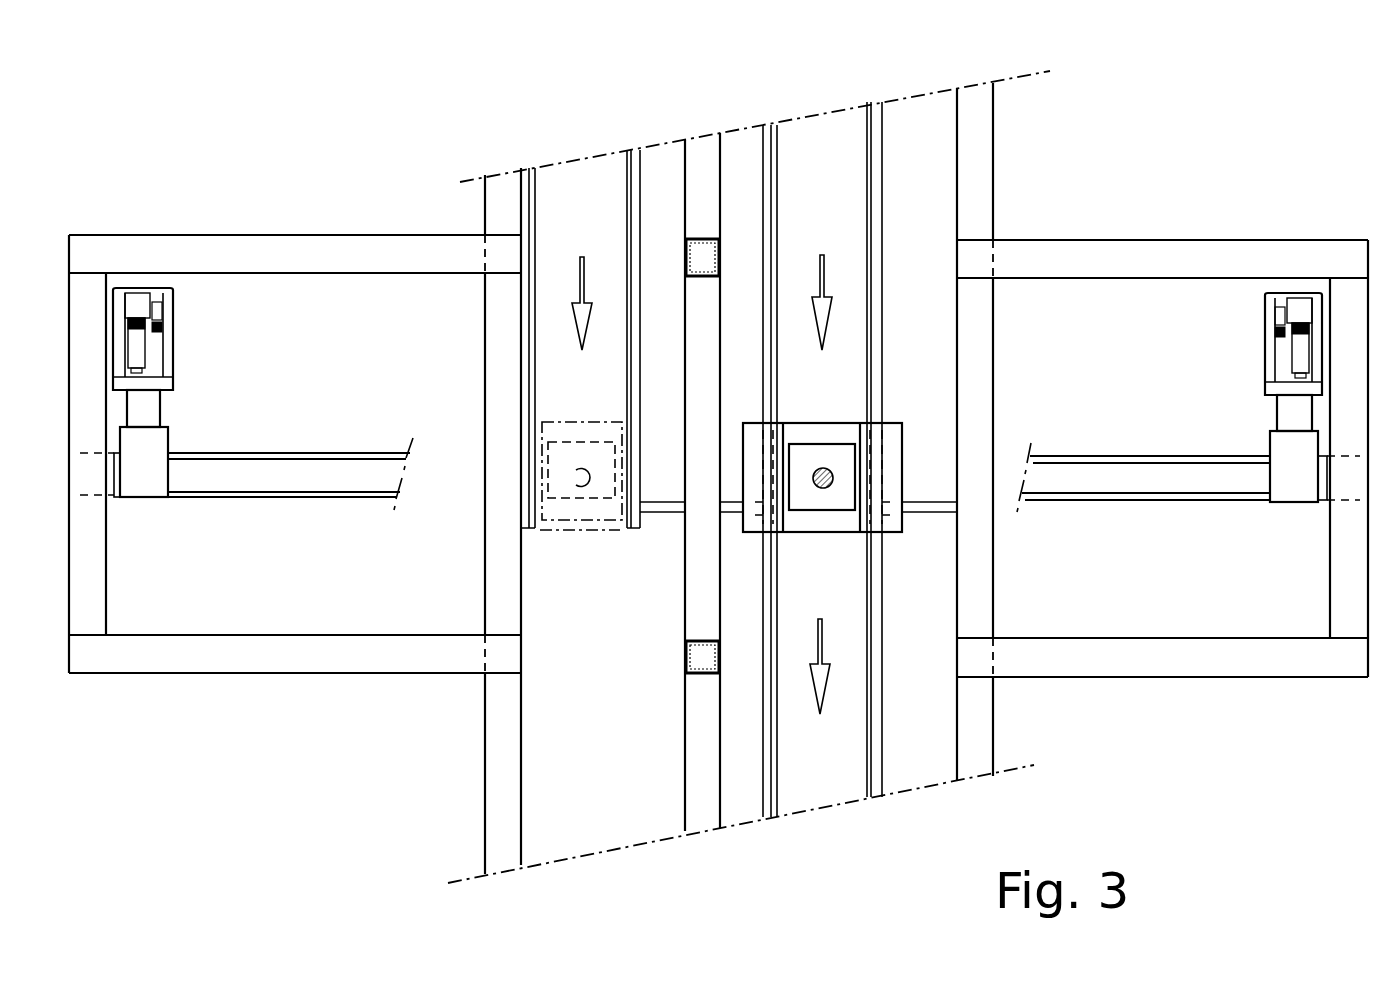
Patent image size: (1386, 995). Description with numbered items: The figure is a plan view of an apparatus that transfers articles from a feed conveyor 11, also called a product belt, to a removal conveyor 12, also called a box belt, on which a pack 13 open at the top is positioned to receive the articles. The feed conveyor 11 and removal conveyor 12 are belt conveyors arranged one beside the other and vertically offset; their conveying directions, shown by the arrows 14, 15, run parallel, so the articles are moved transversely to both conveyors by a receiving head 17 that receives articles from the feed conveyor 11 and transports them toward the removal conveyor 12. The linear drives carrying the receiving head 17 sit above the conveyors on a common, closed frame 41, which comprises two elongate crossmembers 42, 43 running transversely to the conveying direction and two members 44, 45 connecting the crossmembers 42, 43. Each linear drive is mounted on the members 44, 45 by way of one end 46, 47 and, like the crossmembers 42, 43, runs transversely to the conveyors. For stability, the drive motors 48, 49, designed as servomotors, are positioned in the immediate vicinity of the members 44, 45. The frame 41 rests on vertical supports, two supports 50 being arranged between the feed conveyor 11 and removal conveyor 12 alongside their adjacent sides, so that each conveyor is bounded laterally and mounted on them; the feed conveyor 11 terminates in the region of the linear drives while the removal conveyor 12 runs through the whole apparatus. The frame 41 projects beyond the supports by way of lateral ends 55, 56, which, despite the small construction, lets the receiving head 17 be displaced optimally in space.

The feed conveyor 11 is at (603, 866).
The removal conveyor 12 is at (820, 816).
The pack 13 is at (838, 418).
The arrow 14 is at (575, 308).
The arrow 15 is at (830, 308).
The receiving head 17 is at (840, 493).
The frame 41 is at (1197, 221).
The crossmember 42 is at (263, 250).
The crossmember 43 is at (298, 656).
The member 44 is at (1353, 325).
The member 45 is at (80, 293).
The end 46 is at (176, 510).
The end 47 is at (1284, 517).
The drive motor 48 is at (181, 356).
The drive motor 49 is at (1248, 348).
The support 50 is at (703, 234).
The lateral end 55 is at (205, 692).
The lateral end 56 is at (1279, 683).